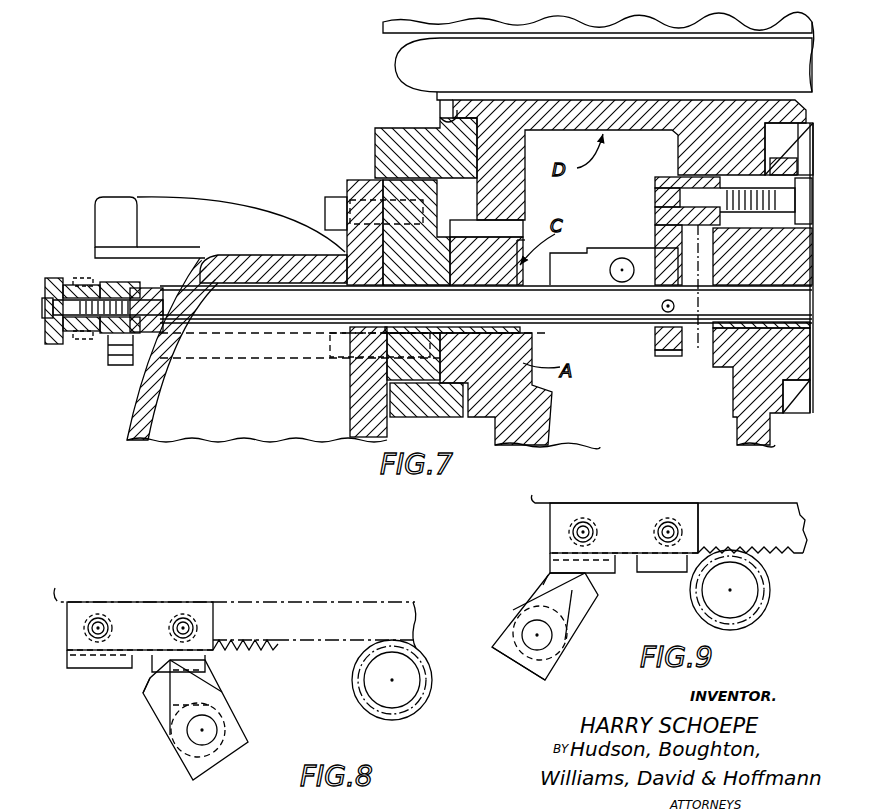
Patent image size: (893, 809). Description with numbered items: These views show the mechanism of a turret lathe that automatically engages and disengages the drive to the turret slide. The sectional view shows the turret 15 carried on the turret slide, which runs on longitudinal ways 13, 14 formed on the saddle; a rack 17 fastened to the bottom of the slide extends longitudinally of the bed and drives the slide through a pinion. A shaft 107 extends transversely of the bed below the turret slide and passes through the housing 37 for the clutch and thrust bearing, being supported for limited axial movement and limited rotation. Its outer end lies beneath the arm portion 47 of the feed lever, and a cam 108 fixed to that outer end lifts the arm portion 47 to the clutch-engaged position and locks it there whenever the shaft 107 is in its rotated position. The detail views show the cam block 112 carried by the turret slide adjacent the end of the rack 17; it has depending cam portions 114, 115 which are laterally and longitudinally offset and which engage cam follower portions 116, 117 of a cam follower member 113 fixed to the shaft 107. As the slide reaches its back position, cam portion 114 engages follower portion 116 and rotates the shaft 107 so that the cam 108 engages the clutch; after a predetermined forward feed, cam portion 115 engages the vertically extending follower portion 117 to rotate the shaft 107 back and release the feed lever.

In FIG. 7, the turret 15 is at (385, 30).
In FIG. 7, the longitudinal way 13 is at (460, 133).
In FIG. 7, the arm portion 47 is at (120, 213).
In FIG. 7, the housing 37 is at (277, 258).
In FIG. 7, the cam block 112 is at (665, 175).
In FIG. 8, the cam block 112 is at (152, 602).
In FIG. 9, the cam block 112 is at (562, 516).
In FIG. 7, the longitudinal way 14 is at (768, 128).
In FIG. 7, the shaft 107 is at (585, 298).
In FIG. 8, the shaft 107 is at (208, 730).
In FIG. 9, the shaft 107 is at (530, 635).
In FIG. 7, the cam follower member 113 is at (661, 329).
In FIG. 9, the cam follower member 113 is at (530, 670).
In FIG. 7, the cam 108 is at (100, 340).
In FIG. 8, the cam 108 is at (158, 733).
In FIG. 9, the cam 108 is at (540, 585).
In FIG. 8, the rack 17 is at (328, 608).
In FIG. 9, the rack 17 is at (750, 515).
In FIG. 8, the cam portion 114 is at (95, 668).
In FIG. 9, the cam portion 114 is at (612, 575).
In FIG. 8, the cam portion 115 is at (158, 672).
In FIG. 9, the cam portion 115 is at (662, 573).
In FIG. 8, the cam follower portion 116 is at (205, 675).
In FIG. 9, the cam follower portion 116 is at (585, 610).
In FIG. 8, the cam follower portion 117 is at (157, 695).
In FIG. 9, the cam follower portion 117 is at (548, 575).